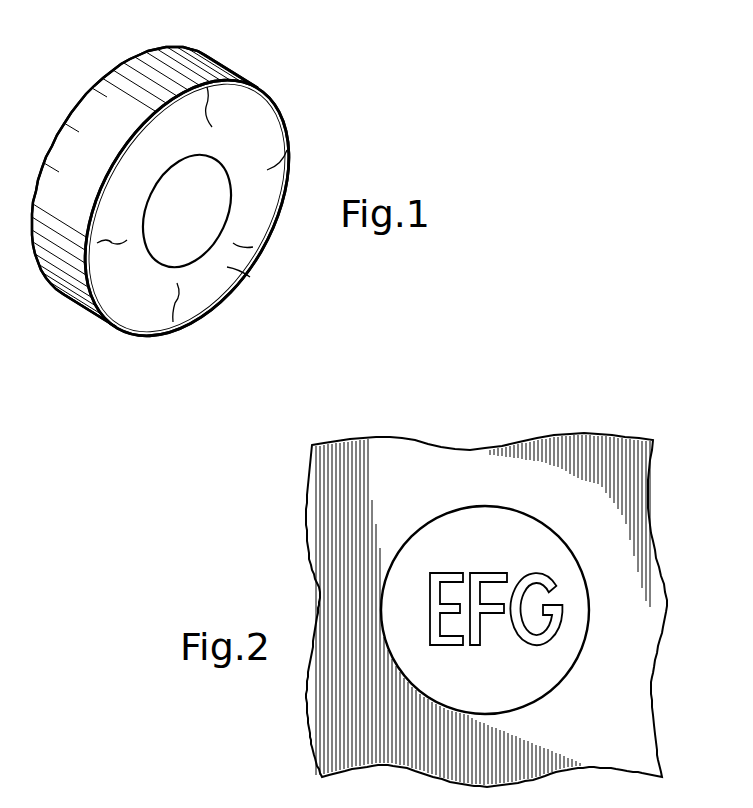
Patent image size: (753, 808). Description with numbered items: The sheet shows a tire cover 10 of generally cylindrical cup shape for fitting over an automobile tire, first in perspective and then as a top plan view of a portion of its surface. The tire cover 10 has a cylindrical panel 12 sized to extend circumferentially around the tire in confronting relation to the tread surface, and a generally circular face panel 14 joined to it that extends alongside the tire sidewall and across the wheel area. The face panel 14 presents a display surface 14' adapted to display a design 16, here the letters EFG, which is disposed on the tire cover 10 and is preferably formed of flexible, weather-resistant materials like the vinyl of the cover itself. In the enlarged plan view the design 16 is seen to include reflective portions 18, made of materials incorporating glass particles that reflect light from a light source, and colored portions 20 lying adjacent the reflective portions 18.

In FIG. 1, the tire cover 10 is at (324, 116).
In FIG. 1, the cylindrical panel 12 is at (183, 73).
In FIG. 1, the face panel 14 is at (189, 208).
In FIG. 2, the face panel 14 is at (491, 564).
In FIG. 1, the display surface 14' is at (184, 347).
In FIG. 1, the design 16 is at (154, 269).
In FIG. 2, the design 16 is at (595, 586).
In FIG. 2, the reflective portions 18 is at (445, 575).
In FIG. 2, the colored portions 20 is at (463, 528).